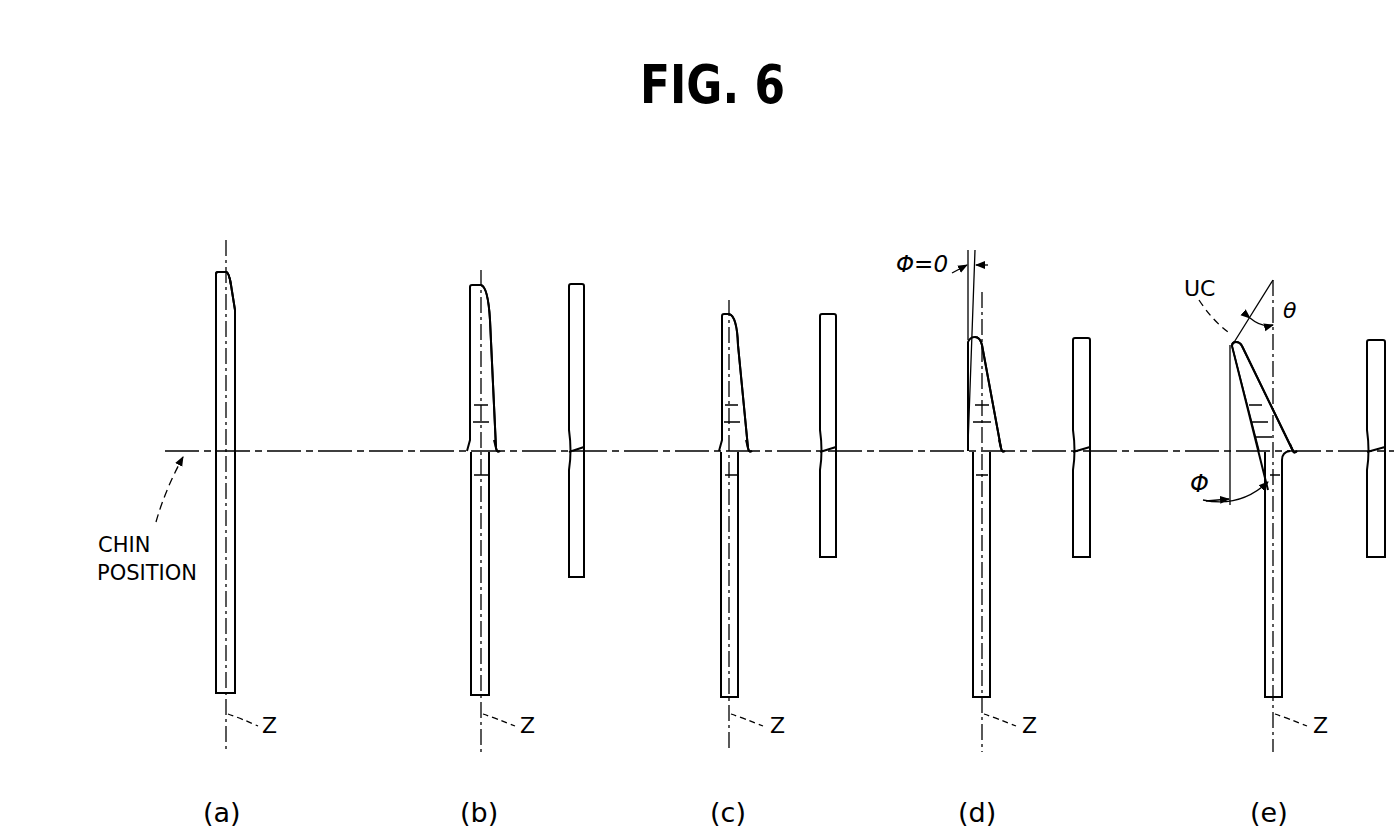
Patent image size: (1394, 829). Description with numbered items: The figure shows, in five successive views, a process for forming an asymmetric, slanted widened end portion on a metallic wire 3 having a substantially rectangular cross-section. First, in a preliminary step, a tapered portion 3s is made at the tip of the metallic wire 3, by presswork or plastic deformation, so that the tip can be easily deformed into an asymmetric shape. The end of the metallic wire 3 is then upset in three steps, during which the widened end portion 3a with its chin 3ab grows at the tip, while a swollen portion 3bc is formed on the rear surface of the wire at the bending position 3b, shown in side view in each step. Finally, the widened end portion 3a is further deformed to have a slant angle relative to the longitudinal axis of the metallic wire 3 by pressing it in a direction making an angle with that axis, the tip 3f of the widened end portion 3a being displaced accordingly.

The metallic wire 3 is at (236, 566).
The tapered portion 3s is at (218, 288).
The widened end portion 3a is at (236, 352).
The bending position 3b is at (569, 452).
The swollen portion 3bc is at (468, 438).
The chin 3ab is at (499, 451).
The blade tip point 3f is at (1230, 347).